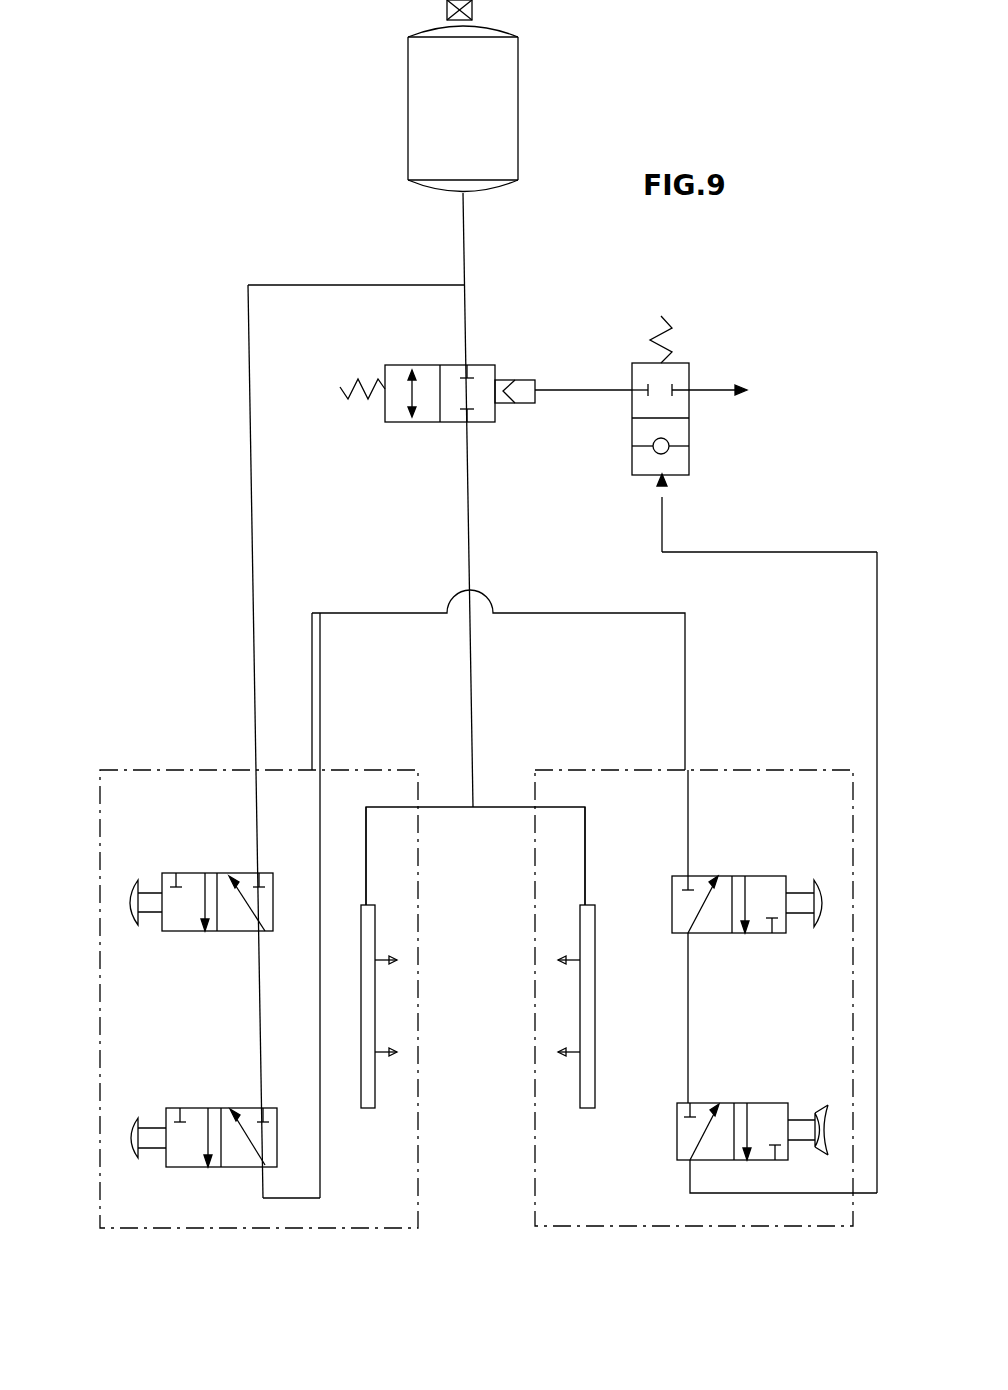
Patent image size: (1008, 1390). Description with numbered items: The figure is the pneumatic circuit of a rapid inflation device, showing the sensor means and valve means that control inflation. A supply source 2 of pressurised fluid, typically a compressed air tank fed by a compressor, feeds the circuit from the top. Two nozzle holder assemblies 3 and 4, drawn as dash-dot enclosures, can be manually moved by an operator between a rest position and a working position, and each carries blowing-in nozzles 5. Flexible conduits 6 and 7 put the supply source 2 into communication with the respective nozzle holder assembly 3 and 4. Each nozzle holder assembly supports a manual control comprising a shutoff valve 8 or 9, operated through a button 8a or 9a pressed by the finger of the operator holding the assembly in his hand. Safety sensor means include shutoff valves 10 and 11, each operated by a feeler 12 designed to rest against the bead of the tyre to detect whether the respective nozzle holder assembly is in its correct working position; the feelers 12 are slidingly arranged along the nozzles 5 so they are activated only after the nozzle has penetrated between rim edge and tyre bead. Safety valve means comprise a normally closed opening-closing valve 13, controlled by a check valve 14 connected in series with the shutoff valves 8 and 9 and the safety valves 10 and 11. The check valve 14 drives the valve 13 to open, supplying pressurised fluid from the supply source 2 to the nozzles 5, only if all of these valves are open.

The supply source 2 is at (508, 103).
The nozzle holder assembly 3 is at (274, 1232).
The nozzle holder assembly 4 is at (624, 1228).
The blowing-in nozzle 5 is at (392, 957).
The flexible conduit 6 is at (368, 868).
The flexible conduit 7 is at (585, 862).
The shutoff valve 8 is at (216, 1106).
The button 8a is at (133, 1122).
The shutoff valve 9 is at (756, 1102).
The button 9a is at (823, 1118).
The shutoff valve 10 is at (196, 873).
The shutoff valve 11 is at (758, 876).
The feeler 12 is at (126, 885).
The opening-closing valve 13 is at (487, 365).
The check valve 14 is at (692, 460).